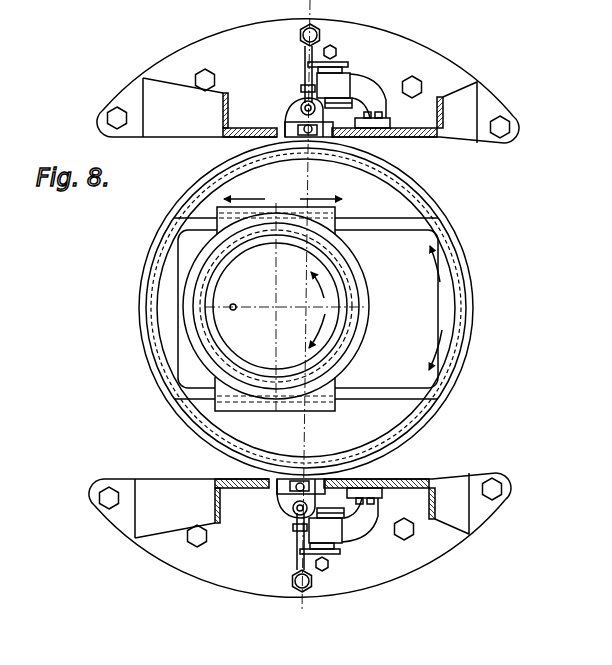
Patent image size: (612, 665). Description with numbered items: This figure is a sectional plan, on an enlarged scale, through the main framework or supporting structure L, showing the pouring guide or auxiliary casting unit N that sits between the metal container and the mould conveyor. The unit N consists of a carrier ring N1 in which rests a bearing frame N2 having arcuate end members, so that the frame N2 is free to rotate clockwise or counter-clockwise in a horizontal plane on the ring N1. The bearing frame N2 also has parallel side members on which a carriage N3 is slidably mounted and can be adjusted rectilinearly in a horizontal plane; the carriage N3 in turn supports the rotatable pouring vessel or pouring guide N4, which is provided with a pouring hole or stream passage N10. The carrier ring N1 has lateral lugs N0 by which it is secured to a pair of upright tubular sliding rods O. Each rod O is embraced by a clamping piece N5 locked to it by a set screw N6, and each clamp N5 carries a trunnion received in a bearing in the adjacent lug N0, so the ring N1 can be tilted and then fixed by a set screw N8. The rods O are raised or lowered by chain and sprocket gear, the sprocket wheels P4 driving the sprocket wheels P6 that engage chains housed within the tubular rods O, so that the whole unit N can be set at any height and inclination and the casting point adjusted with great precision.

The supporting structure L is at (417, 142).
The auxiliary casting unit N is at (136, 243).
The carrier ring N1 is at (207, 182).
The bearing frame N2 is at (393, 218).
The carriage N3 is at (363, 287).
The pouring vessel N4 is at (345, 347).
The clamping piece N5 is at (291, 104).
The set screw N6 is at (303, 97).
The set screw N8 is at (313, 139).
The lateral lug N0 is at (295, 139).
The pouring hole N10 is at (230, 307).
The sliding rod O is at (299, 104).
The sprocket wheel P4 is at (337, 70).
The sprocket wheel P6 is at (366, 97).